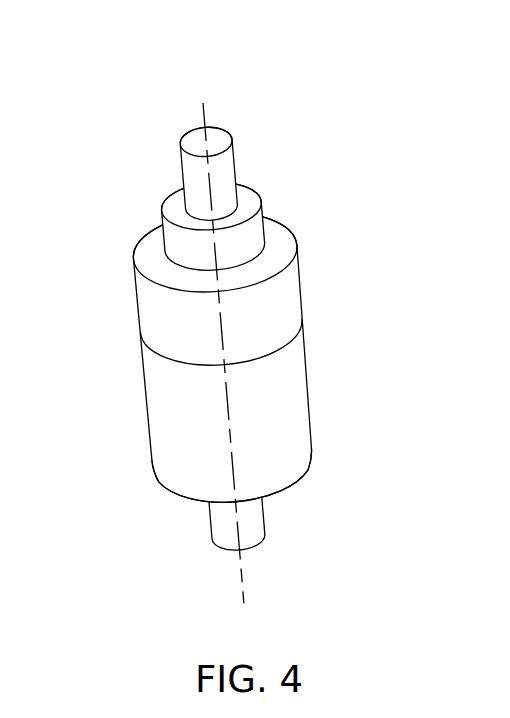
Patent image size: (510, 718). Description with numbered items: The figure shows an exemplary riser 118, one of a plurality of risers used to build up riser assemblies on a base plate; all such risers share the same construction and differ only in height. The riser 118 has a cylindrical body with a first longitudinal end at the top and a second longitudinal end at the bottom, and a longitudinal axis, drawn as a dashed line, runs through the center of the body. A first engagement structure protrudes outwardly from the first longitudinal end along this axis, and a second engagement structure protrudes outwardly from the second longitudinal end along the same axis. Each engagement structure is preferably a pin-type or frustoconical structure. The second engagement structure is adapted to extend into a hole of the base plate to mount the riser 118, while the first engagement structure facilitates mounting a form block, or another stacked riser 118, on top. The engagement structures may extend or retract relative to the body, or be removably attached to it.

The riser 118 is at (343, 65).